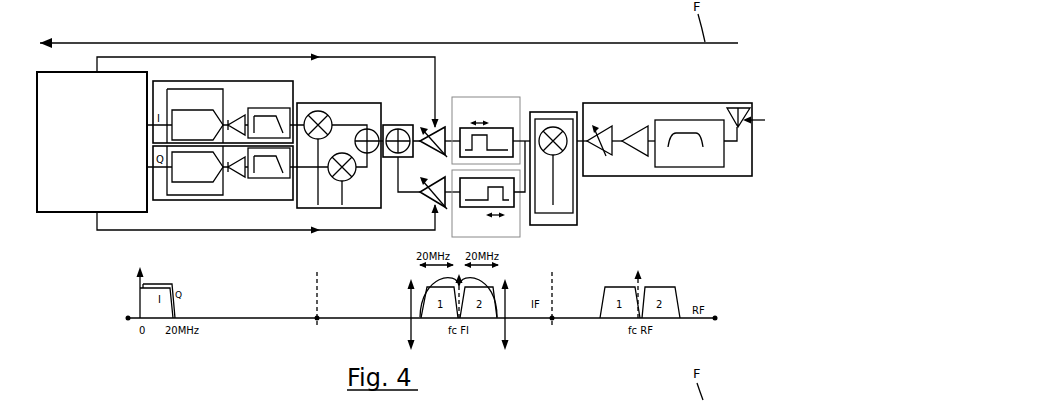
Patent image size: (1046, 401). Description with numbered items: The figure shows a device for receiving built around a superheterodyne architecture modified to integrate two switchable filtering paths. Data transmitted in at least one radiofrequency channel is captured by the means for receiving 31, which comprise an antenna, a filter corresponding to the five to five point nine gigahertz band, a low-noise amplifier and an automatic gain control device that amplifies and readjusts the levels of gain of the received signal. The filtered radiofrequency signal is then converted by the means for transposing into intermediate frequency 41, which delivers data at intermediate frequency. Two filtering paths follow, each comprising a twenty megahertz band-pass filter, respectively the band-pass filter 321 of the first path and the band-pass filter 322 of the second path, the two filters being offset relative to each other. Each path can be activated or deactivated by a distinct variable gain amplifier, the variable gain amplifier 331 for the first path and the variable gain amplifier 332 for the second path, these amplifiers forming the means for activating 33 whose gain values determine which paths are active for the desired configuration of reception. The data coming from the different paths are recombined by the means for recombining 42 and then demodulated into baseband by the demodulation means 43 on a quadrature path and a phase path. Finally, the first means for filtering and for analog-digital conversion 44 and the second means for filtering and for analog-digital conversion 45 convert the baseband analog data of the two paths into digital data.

The means for activating 33 is at (73, 203).
The first means for filtering and for analog-digital conversion 44 is at (270, 93).
The second means for filtering and for analog-digital conversion 45 is at (257, 197).
The demodulation means 43 is at (362, 107).
The means for recombining 42 is at (393, 123).
The variable gain amplifier 331 is at (442, 126).
The variable gain amplifier 332 is at (440, 210).
The band-pass filter 321 is at (513, 98).
The band-pass filter 322 is at (520, 238).
The means for transposing into intermediate frequency 41 is at (566, 118).
The means for receiving 31 is at (712, 104).